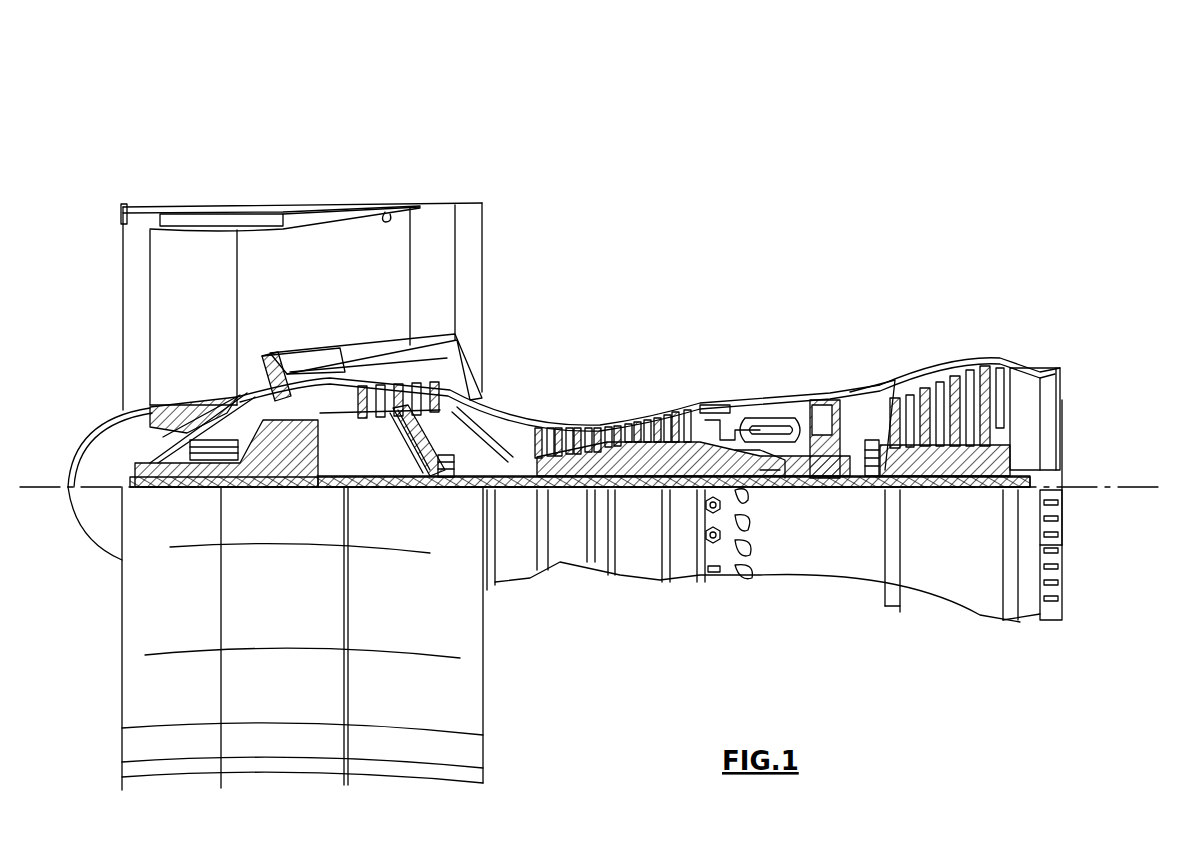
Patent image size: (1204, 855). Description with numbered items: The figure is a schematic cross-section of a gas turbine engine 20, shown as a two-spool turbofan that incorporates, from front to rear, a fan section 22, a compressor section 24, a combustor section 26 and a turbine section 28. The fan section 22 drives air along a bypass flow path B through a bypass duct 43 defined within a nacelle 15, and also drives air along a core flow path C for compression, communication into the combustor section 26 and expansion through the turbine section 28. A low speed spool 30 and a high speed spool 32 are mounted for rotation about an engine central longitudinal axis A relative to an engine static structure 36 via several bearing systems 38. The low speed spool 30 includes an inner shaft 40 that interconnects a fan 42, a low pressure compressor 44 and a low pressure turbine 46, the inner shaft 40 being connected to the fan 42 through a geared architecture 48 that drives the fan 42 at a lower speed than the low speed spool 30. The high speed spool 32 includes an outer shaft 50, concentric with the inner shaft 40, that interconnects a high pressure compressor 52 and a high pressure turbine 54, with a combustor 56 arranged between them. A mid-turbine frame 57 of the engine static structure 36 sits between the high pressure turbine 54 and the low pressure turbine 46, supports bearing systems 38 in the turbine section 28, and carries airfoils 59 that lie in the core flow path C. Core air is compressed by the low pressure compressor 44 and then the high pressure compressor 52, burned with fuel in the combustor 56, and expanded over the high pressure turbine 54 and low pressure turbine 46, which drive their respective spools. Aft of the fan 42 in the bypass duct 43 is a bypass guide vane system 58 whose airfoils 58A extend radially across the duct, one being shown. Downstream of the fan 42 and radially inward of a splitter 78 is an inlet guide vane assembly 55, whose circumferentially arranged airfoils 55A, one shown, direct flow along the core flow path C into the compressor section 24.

The gas turbine engine 20 is at (762, 257).
The fan section 22 is at (232, 192).
The compressor section 24 is at (536, 390).
The combustor section 26 is at (756, 382).
The turbine section 28 is at (902, 348).
The low speed spool 30 is at (641, 495).
The high speed spool 32 is at (685, 440).
The engine static structure 36 is at (680, 583).
The bearing systems 38 is at (440, 480).
The inner shaft 40 is at (510, 497).
The fan 42 is at (194, 319).
The bypass duct 43 is at (385, 213).
The low pressure compressor 44 is at (410, 385).
The low pressure turbine 46 is at (947, 366).
The geared architecture 48 is at (306, 470).
The outer shaft 50 is at (760, 472).
The high pressure compressor 52 is at (618, 447).
The high pressure turbine 54 is at (824, 402).
The inlet guide vane assembly 55 is at (252, 352).
The airfoils 55A is at (302, 368).
The combustor 56 is at (760, 430).
The mid-turbine frame 57 is at (865, 398).
The bypass guide vane system 58 is at (458, 258).
The airfoils 58A is at (440, 283).
The airfoils 59 is at (880, 455).
The splitter 78 is at (262, 352).
The nacelle 15 is at (300, 205).
The engine central longitudinal axis A is at (1162, 487).
The bypass flow path B is at (265, 279).
The core flow path C is at (305, 390).